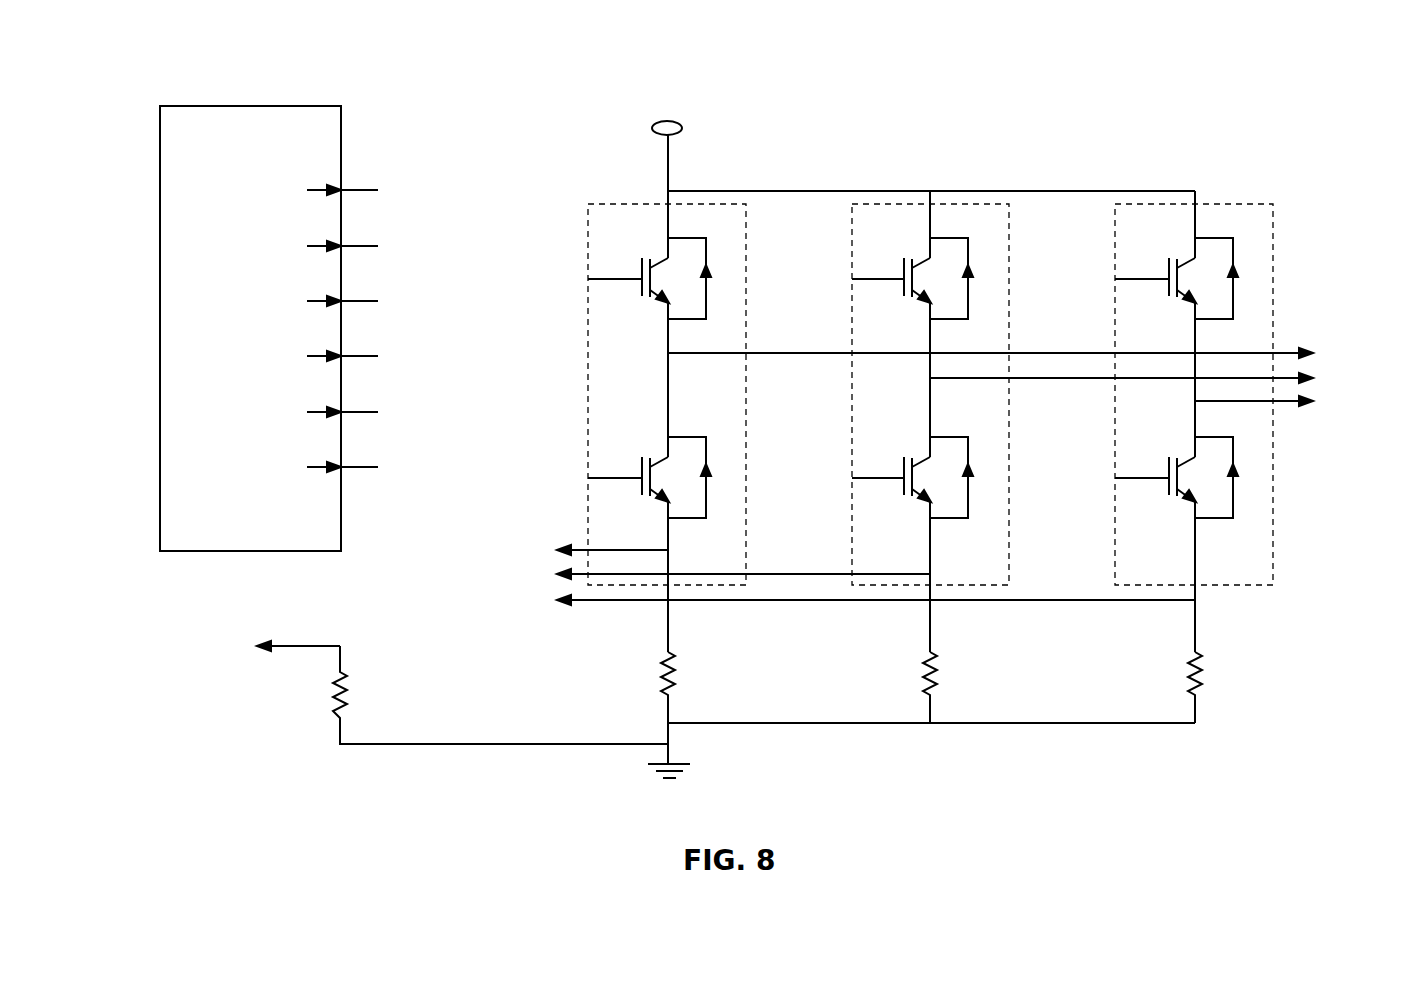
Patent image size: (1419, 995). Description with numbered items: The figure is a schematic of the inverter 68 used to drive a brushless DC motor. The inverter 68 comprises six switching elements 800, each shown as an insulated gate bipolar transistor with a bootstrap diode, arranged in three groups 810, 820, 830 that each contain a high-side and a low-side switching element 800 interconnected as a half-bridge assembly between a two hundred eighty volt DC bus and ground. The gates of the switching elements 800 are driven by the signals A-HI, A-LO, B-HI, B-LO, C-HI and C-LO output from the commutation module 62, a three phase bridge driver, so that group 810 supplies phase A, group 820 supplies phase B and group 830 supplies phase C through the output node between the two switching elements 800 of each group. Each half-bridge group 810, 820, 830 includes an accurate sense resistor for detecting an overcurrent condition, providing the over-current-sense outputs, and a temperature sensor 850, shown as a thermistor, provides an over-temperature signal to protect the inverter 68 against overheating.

The inverter 68 is at (203, 48).
The commutation module 62 is at (212, 106).
The group 810 is at (658, 200).
The group 820 is at (918, 204).
The group 830 is at (1182, 200).
The switching element 800 is at (649, 314).
The temperature sensor 850 is at (350, 690).